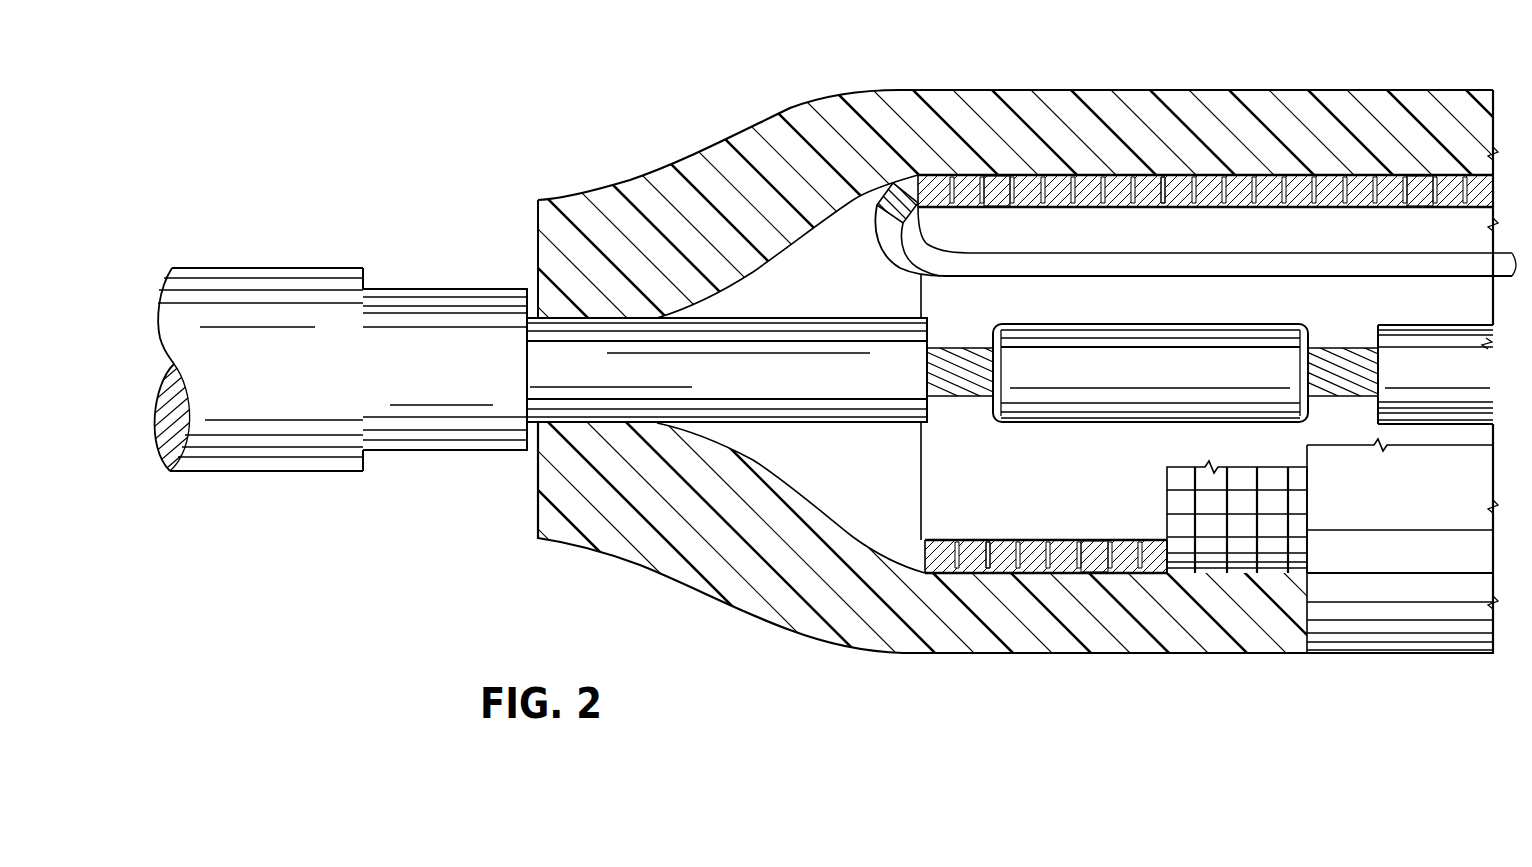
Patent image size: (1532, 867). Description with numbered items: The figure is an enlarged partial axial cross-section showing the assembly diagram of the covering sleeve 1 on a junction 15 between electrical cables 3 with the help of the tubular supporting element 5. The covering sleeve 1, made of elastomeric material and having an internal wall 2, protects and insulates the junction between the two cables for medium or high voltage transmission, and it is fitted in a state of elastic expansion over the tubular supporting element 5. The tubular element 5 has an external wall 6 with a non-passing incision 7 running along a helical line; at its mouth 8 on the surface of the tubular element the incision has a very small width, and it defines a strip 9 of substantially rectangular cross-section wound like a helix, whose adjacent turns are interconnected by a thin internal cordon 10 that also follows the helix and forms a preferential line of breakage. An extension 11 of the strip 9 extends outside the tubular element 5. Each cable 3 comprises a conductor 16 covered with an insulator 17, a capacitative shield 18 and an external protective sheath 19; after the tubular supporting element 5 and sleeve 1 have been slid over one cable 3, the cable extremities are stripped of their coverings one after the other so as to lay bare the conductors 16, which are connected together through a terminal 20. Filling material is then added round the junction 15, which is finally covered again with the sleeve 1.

The covering sleeve 1 is at (940, 120).
The internal wall 2 is at (803, 240).
The electrical cables 3 is at (460, 453).
The tubular supporting element 5 is at (1292, 213).
The external wall 6 is at (1050, 170).
The non-passing incision 7 is at (1232, 175).
The mouth of the incision 8 is at (1388, 178).
The strip 9 is at (1020, 210).
The internal cordon 10 is at (1159, 210).
The extension of the strip 11 is at (1087, 265).
The junction 15 is at (1143, 323).
The conductors 16 is at (960, 390).
The insulators 17 is at (812, 393).
The capacitative shields 18 is at (432, 325).
The external protective sheaths 19 is at (305, 293).
The terminal 20 is at (1118, 400).